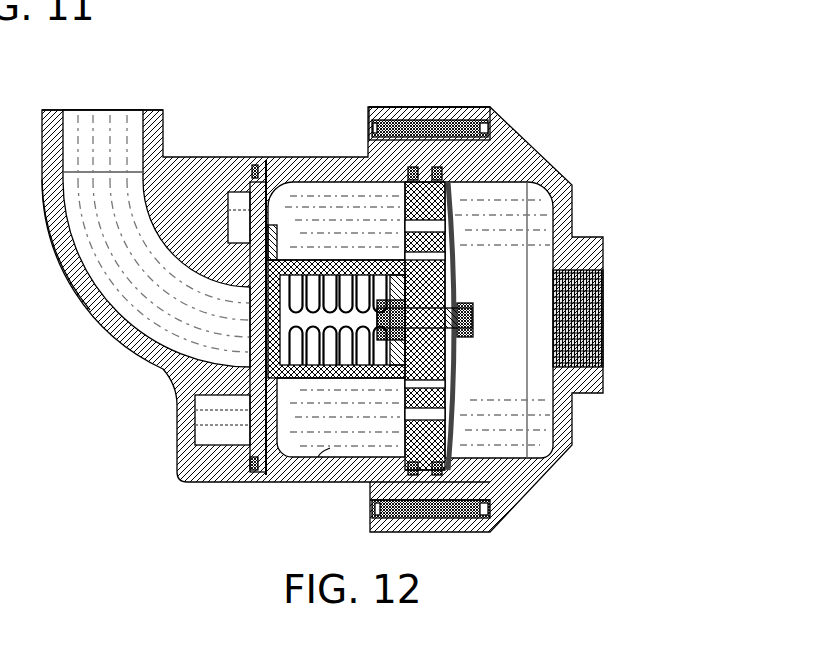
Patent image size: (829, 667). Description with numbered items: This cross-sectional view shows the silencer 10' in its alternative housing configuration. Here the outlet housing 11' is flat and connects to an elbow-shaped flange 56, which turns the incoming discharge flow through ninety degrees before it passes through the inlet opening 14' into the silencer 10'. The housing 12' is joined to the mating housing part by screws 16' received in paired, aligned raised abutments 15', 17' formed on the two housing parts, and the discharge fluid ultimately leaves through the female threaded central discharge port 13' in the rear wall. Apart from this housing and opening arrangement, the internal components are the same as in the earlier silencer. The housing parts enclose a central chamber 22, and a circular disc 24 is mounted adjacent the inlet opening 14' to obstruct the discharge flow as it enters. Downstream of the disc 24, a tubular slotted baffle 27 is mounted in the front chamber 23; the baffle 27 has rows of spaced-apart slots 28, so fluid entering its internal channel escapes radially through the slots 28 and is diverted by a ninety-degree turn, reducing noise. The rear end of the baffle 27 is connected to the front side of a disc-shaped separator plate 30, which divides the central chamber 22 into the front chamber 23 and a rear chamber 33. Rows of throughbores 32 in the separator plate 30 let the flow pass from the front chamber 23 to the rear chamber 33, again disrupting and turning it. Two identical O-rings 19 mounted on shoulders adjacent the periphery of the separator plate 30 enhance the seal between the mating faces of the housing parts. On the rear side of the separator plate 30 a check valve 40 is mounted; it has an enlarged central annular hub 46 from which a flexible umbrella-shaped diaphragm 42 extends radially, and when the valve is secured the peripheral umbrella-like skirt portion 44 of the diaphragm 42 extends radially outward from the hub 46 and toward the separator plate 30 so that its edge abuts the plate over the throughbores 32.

The silencer 10' is at (156, 77).
The outlet housing 11' is at (333, 226).
The housing 12' is at (329, 310).
The central discharge port 13' is at (610, 296).
The inlet opening 14' is at (156, 217).
The raised abutment 15' is at (388, 53).
The screw 16' is at (478, 285).
The raised abutment 17' is at (452, 53).
The O-ring 19 is at (458, 518).
The central chamber 22 is at (528, 455).
The front chamber 23 is at (365, 428).
The circular disc 24 is at (187, 357).
The baffle 27 is at (267, 157).
The slots 28 is at (335, 345).
The separator plate 30 is at (412, 107).
The throughbores 32 is at (447, 236).
The rear chamber 33 is at (515, 303).
The check valve 40 is at (458, 263).
The diaphragm 42 is at (452, 352).
The skirt portion 44 is at (455, 250).
The central annular hub 46 is at (458, 407).
The elbow-shaped flange 56 is at (72, 280).